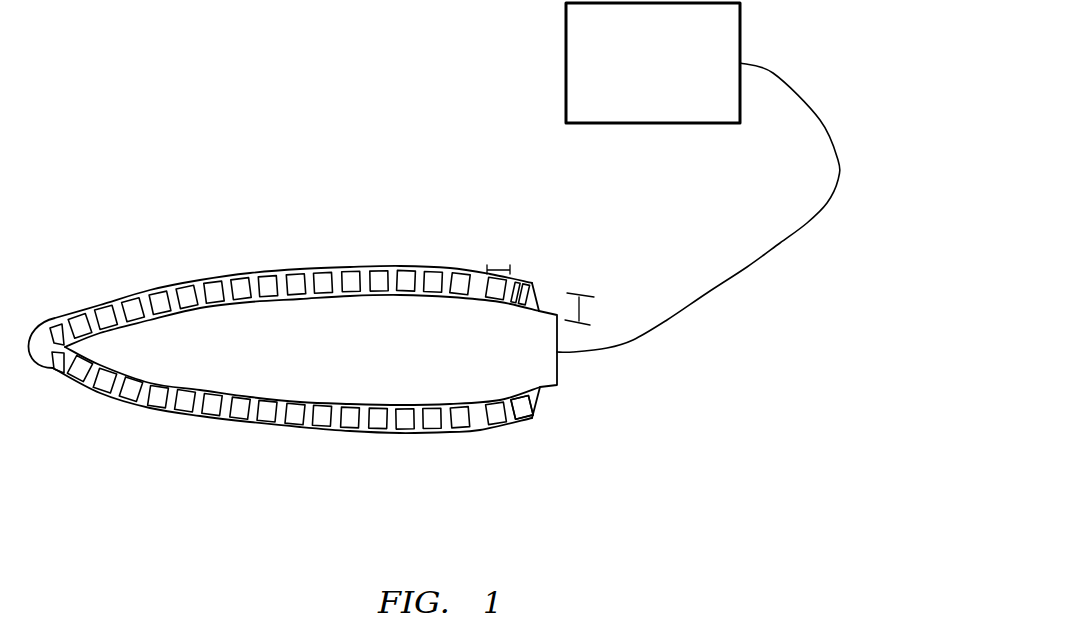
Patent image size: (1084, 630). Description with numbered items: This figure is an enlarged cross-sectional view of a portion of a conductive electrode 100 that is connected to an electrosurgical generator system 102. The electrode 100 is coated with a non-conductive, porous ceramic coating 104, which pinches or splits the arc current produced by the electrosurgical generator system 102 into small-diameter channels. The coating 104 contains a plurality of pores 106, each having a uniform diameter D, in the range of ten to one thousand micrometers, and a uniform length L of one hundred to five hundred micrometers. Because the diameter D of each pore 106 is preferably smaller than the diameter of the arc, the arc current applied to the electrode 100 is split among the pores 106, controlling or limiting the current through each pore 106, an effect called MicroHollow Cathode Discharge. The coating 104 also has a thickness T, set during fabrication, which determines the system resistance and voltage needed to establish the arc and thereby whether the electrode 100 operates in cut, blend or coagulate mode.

The conductive electrode 100 is at (547, 365).
The electrosurgical generator system 102 is at (672, 78).
The non-conductive, porous ceramic coating 104 is at (152, 392).
The pores 106 is at (523, 417).
The pore diameter D is at (497, 265).
The pore length L is at (530, 288).
The coating thickness T is at (583, 308).